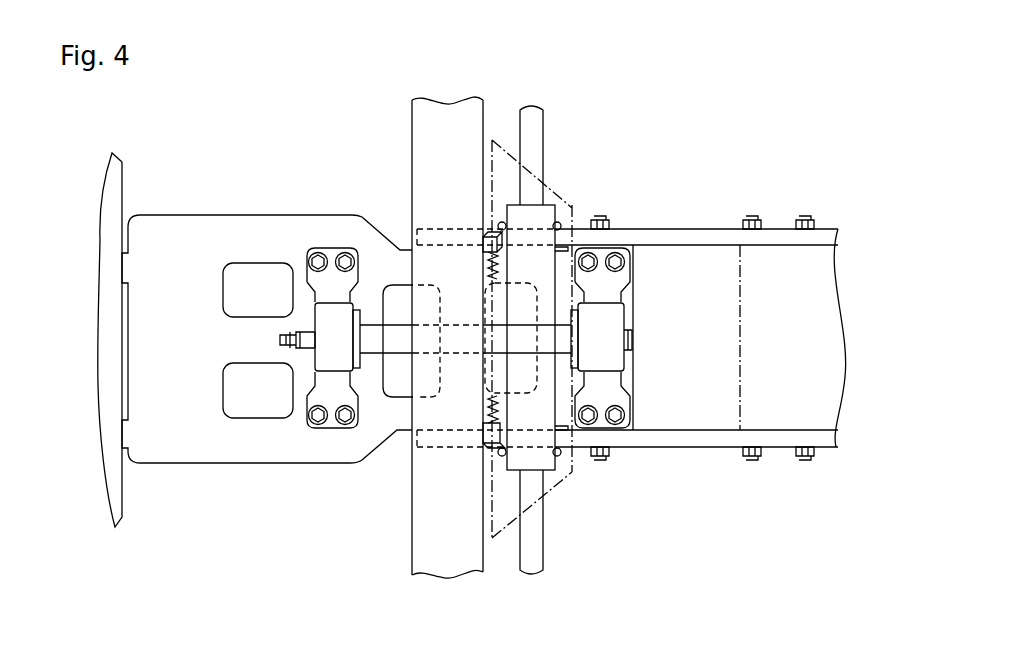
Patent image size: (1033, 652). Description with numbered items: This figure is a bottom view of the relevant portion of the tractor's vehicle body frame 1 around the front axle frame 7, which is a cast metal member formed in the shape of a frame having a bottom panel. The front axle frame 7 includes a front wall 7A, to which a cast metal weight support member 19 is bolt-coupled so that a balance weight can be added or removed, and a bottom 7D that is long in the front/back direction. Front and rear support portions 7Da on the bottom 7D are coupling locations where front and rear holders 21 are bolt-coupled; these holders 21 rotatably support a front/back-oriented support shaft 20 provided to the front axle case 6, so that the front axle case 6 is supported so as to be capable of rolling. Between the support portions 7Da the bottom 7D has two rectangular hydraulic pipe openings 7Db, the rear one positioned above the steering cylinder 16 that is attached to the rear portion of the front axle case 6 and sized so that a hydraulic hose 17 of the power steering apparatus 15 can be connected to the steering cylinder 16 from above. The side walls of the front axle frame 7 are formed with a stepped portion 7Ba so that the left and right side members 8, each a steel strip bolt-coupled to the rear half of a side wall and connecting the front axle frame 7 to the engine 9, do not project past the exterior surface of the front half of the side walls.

The vehicle body frame 1 is at (777, 227).
The front axle case 6 is at (412, 128).
The front axle frame 7 is at (215, 213).
The front wall 7A is at (148, 420).
The stepped portion 7Ba is at (392, 235).
The bottom 7D is at (248, 440).
The support portion 7Da is at (330, 237).
The hydraulic pipe opening 7Db is at (498, 312).
The side member 8 is at (688, 229).
The engine 9 is at (740, 362).
The power steering apparatus 15 is at (545, 159).
The steering cylinder 16 is at (553, 465).
The hydraulic hose 17 is at (500, 273).
The weight support member 19 is at (117, 197).
The support shaft 20 is at (372, 328).
The holder 21 is at (320, 313).